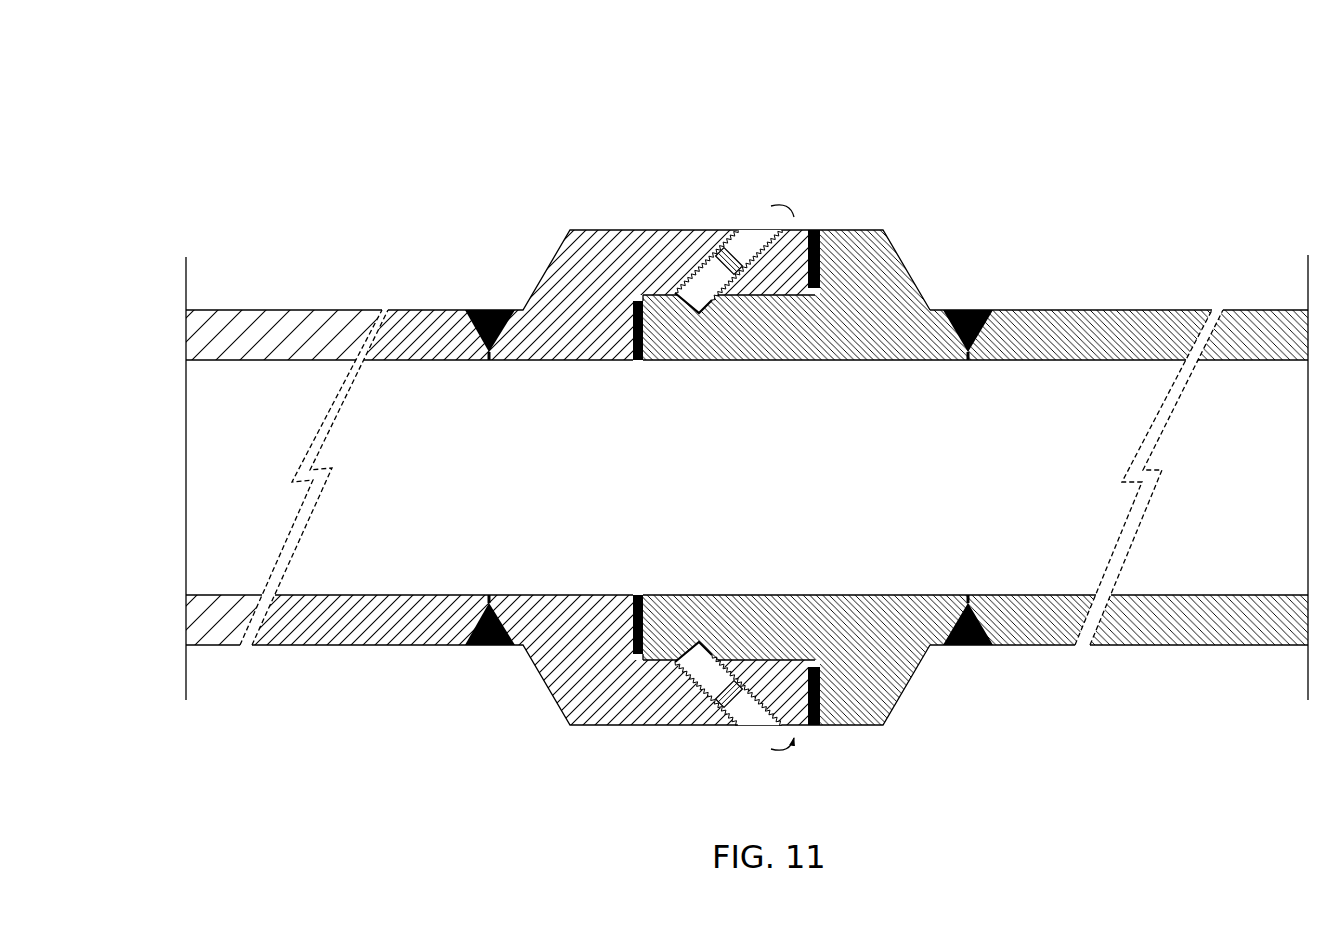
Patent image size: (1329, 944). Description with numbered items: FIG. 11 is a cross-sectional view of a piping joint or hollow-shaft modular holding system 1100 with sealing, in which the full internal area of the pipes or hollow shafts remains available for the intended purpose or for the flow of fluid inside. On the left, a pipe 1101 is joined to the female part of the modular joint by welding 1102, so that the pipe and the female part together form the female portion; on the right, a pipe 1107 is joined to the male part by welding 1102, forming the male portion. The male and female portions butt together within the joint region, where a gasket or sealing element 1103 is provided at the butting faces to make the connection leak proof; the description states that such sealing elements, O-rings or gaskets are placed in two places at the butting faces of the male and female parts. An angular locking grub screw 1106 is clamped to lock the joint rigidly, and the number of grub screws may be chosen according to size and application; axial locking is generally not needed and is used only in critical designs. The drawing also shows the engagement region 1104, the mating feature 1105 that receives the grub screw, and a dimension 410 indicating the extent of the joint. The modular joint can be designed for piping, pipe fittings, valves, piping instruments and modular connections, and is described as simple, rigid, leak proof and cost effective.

The pipe joint assembly 1100 is at (725, 415).
The pipe 1101 is at (558, 462).
The welding 1102 is at (736, 446).
The gasket or sealing element 1103 is at (622, 455).
The slot 1104 is at (655, 467).
The threaded region 1105 is at (809, 493).
The angular locking grub screw 1106 is at (627, 510).
The pipe 1107 is at (975, 477).
The width dimension 410 is at (633, 301).